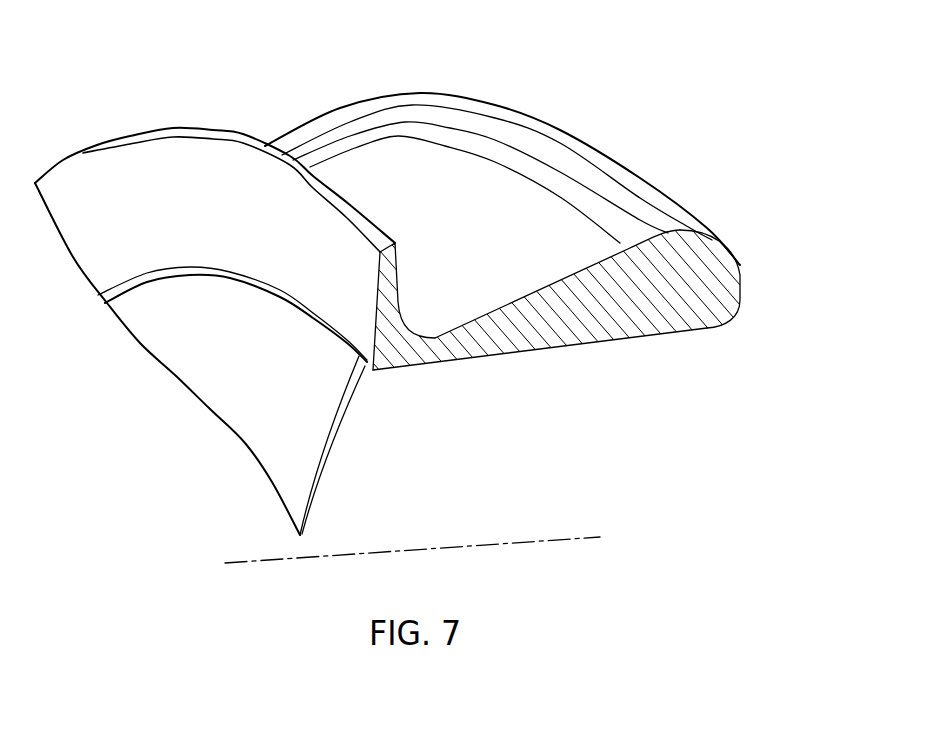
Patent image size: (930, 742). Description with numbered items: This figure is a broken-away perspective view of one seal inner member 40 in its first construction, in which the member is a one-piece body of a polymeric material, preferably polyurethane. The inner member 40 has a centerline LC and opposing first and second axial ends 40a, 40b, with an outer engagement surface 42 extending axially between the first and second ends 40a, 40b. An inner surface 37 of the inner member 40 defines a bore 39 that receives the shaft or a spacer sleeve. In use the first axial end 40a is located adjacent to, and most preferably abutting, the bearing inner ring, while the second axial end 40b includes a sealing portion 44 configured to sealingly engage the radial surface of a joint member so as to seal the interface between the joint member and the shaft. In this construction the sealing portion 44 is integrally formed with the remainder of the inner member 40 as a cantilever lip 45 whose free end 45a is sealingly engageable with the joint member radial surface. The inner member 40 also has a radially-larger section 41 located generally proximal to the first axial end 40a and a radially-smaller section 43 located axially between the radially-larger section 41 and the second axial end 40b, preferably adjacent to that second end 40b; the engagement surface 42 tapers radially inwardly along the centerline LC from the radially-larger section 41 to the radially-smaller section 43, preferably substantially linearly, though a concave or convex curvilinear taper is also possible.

The inner surface 37 is at (622, 340).
The bore 39 is at (196, 377).
The seal inner member 40 is at (532, 96).
The first axial end 40a is at (742, 297).
The second axial end 40b is at (378, 373).
The radially-larger section 41 is at (432, 345).
The outer engagement surface 42 is at (550, 253).
The radially-smaller section 43 is at (632, 213).
The sealing portion 44 is at (230, 258).
The cantilever lip 45 is at (296, 292).
The free end 45a is at (230, 142).
The centerline LC is at (560, 542).